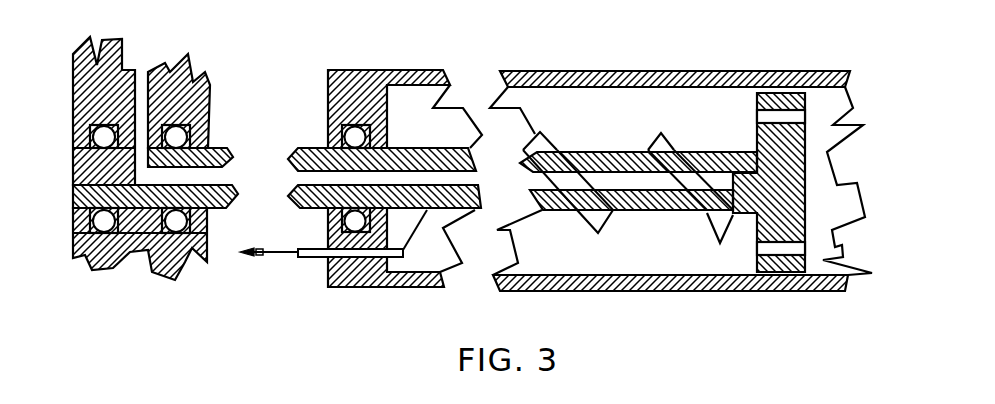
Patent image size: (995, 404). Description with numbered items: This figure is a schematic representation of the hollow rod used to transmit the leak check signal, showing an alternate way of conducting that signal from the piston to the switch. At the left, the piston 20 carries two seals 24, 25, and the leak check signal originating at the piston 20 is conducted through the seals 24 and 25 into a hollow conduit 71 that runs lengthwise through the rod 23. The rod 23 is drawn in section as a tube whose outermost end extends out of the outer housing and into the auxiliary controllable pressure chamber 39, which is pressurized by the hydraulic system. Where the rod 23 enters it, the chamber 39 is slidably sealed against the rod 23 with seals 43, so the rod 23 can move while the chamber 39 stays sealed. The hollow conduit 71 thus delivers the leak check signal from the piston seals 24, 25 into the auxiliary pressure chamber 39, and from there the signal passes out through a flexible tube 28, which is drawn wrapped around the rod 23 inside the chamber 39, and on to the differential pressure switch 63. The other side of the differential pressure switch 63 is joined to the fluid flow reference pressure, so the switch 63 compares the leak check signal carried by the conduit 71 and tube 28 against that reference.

The piston 20 is at (194, 96).
The rod 23 is at (212, 148).
The seal 24 is at (93, 240).
The seal 25 is at (190, 128).
The hollow conduit 71 is at (297, 179).
The seals 43 is at (353, 125).
The differential pressure switch 63 is at (250, 253).
The auxiliary controllable pressure chamber 39 is at (708, 70).
The flexible tube 28 is at (663, 139).